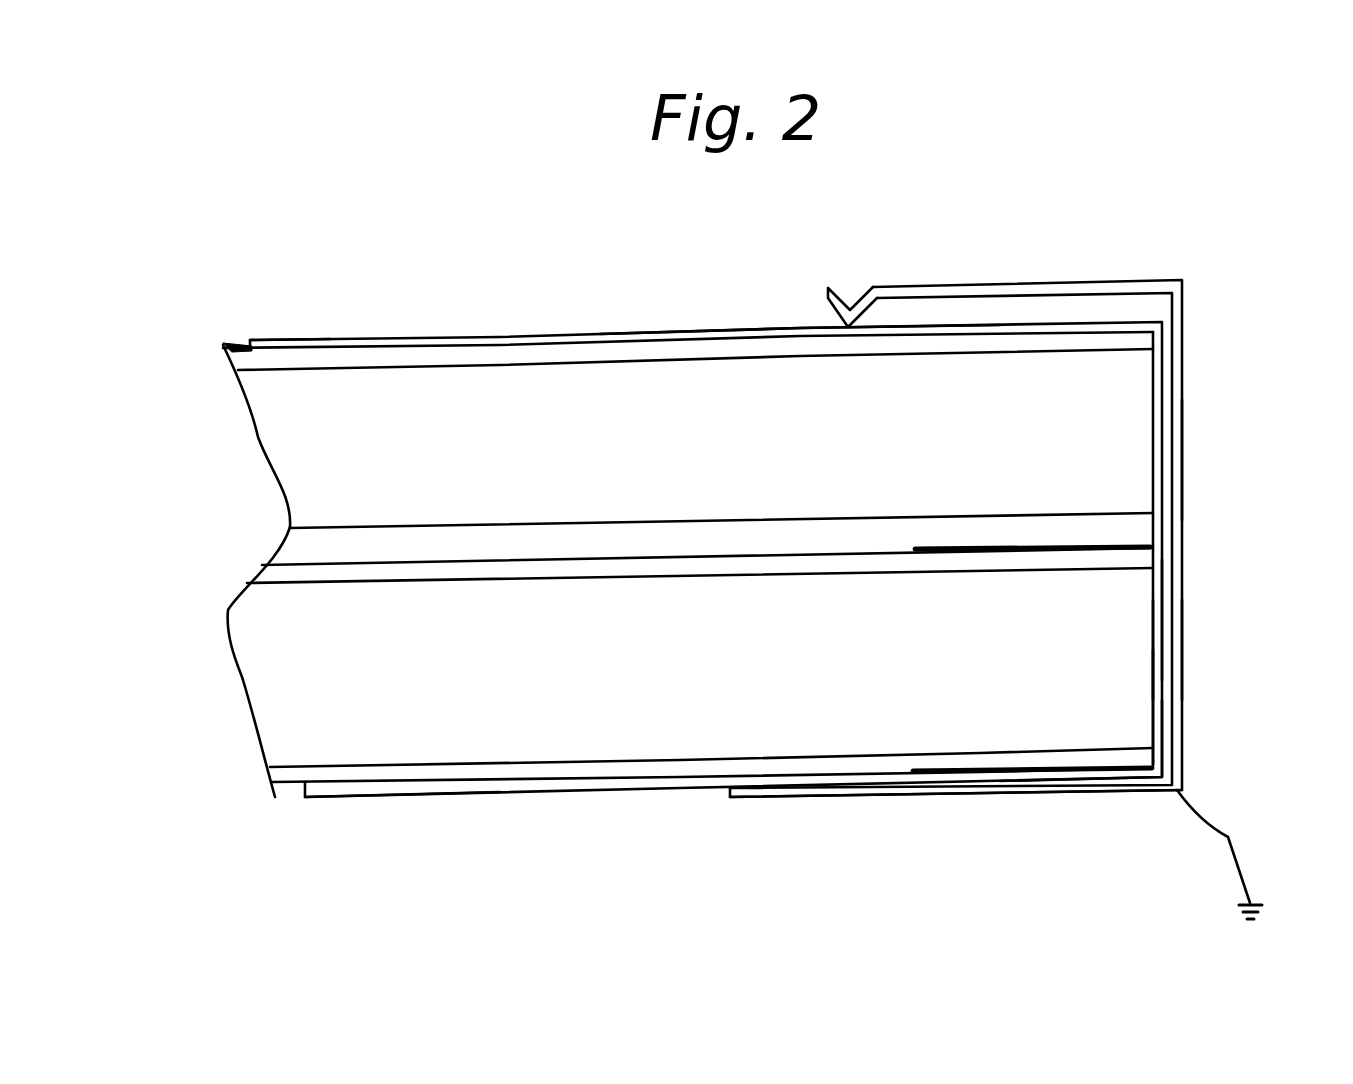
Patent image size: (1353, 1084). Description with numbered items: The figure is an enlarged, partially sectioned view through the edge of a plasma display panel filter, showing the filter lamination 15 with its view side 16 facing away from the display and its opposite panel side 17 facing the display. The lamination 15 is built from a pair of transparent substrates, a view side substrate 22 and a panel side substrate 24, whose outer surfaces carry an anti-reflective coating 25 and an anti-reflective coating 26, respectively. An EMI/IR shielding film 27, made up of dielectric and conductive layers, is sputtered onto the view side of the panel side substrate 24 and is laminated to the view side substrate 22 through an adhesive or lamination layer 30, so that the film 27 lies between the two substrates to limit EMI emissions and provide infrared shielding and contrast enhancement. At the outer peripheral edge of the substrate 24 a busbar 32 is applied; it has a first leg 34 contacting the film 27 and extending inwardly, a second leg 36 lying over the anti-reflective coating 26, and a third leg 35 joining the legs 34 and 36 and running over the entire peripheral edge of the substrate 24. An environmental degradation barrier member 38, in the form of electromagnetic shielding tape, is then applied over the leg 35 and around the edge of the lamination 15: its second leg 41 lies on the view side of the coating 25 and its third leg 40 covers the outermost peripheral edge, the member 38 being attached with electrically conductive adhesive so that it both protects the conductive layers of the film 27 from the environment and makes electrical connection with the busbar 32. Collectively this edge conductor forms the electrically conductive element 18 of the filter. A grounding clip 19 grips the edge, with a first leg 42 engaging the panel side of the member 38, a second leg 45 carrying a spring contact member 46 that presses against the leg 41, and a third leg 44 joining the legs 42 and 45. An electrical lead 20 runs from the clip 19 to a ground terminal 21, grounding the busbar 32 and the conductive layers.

The filter lamination 15 is at (1028, 676).
The view side 16 is at (273, 342).
The panel side 17 is at (283, 787).
The electrically conductive element 18 is at (632, 334).
The grounding clip 19 is at (1195, 455).
The electrical lead 20 is at (1228, 837).
The ground terminal 21 is at (1257, 903).
The view side substrate 22 is at (333, 407).
The panel side substrate 24 is at (528, 732).
The anti-reflective coating 25 is at (527, 350).
The anti-reflective coating 26 is at (668, 768).
The EMI/IR shielding film 27 is at (330, 578).
The adhesive or lamination layer 30 is at (302, 544).
The busbar 32 is at (1158, 703).
The first leg 34 is at (1080, 550).
The third leg 35 is at (1155, 617).
The second leg 36 is at (1128, 775).
The environmental degradation barrier member 38 is at (1078, 778).
The third leg 40 is at (1158, 390).
The second leg 41 is at (697, 330).
The first leg 42 is at (940, 797).
The third leg 44 is at (1183, 642).
The second leg 45 is at (928, 288).
The spring contact member 46 is at (855, 304).